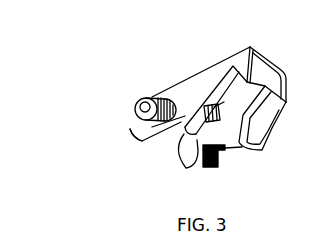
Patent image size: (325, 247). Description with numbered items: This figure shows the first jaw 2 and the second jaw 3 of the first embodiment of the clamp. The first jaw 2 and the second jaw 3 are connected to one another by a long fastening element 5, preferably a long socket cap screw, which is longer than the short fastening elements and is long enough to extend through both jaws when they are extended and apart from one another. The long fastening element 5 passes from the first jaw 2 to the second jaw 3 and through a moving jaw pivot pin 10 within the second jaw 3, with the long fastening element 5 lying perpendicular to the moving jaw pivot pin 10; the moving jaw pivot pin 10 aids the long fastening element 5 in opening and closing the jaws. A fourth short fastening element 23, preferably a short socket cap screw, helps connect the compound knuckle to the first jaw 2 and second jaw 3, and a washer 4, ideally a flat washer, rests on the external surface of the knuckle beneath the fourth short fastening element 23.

The first jaw 2 is at (179, 85).
The second jaw 3 is at (176, 141).
The washer 4 is at (130, 131).
The long fastening element 5 is at (218, 165).
The moving jaw pivot pin 10 is at (177, 147).
The fourth short fastening element 23 is at (140, 107).